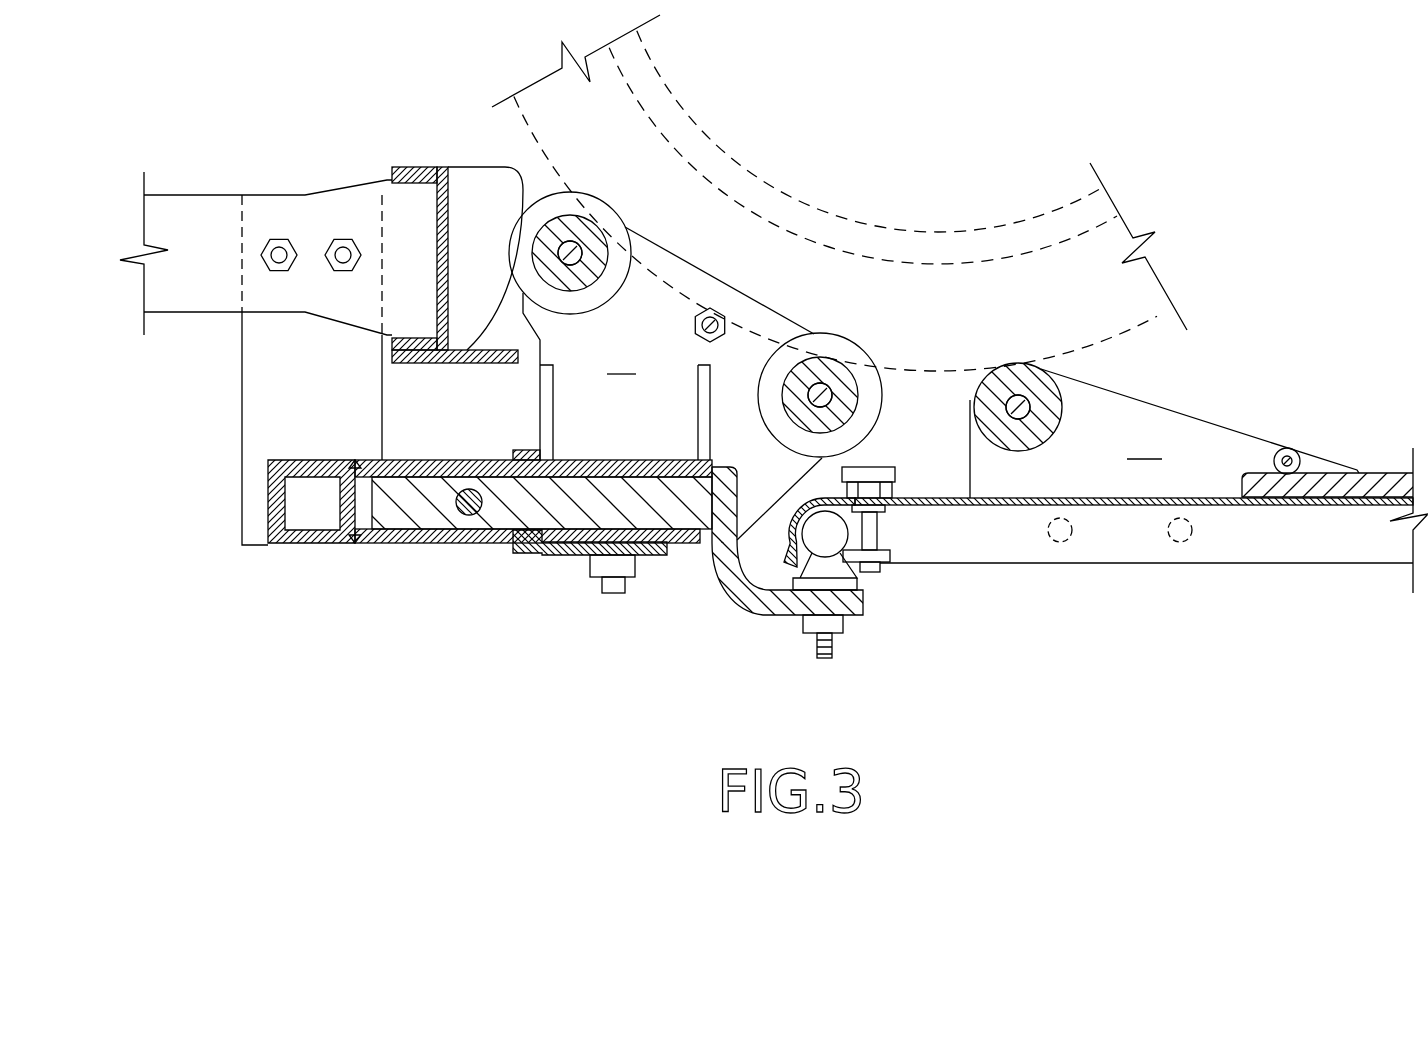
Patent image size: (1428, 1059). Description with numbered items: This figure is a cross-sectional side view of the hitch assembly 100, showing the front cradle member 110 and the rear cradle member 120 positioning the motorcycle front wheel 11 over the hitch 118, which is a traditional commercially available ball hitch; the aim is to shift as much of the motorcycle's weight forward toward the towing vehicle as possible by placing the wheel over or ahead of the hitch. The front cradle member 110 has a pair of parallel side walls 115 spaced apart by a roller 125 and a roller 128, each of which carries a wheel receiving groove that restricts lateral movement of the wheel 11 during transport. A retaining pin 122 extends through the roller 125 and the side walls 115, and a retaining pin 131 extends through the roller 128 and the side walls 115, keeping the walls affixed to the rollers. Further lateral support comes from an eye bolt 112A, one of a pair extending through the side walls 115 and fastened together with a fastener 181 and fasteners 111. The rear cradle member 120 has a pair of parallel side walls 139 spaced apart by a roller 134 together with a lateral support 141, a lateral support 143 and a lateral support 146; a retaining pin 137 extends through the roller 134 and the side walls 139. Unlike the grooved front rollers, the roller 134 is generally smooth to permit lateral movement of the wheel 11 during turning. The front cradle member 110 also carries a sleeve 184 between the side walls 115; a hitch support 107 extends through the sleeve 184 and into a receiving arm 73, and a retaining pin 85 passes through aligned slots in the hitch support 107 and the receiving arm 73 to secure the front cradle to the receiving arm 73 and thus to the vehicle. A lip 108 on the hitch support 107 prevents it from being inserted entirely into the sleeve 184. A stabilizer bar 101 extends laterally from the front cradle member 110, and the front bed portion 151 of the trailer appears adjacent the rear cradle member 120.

The front wheel 11 is at (1135, 300).
The receiving arm 73 is at (393, 547).
The retaining pin 85 is at (470, 516).
The hitch assembly 100 is at (913, 685).
The stabilizer bar 101 is at (567, 556).
The hitch support 107 is at (740, 597).
The lip 108 is at (720, 466).
The front cradle member 110 is at (795, 162).
The fasteners 111 is at (725, 320).
The eye bolt 112A is at (730, 326).
The side walls 115 is at (542, 411).
The hitch 118 is at (838, 533).
The rear cradle member 120 is at (1195, 381).
The retaining pin 122 is at (572, 243).
The roller 125 is at (613, 222).
The roller 128 is at (872, 385).
The retaining pin 131 is at (822, 384).
The roller 134 is at (1028, 403).
The retaining pin 137 is at (1062, 416).
The side walls 139 is at (1141, 514).
The lateral support 141 is at (1060, 543).
The lateral support 143 is at (1183, 543).
The lateral support 146 is at (1292, 455).
The front bed portion 151 is at (1376, 472).
The fastener 181 is at (715, 309).
The sleeve 184 is at (684, 544).